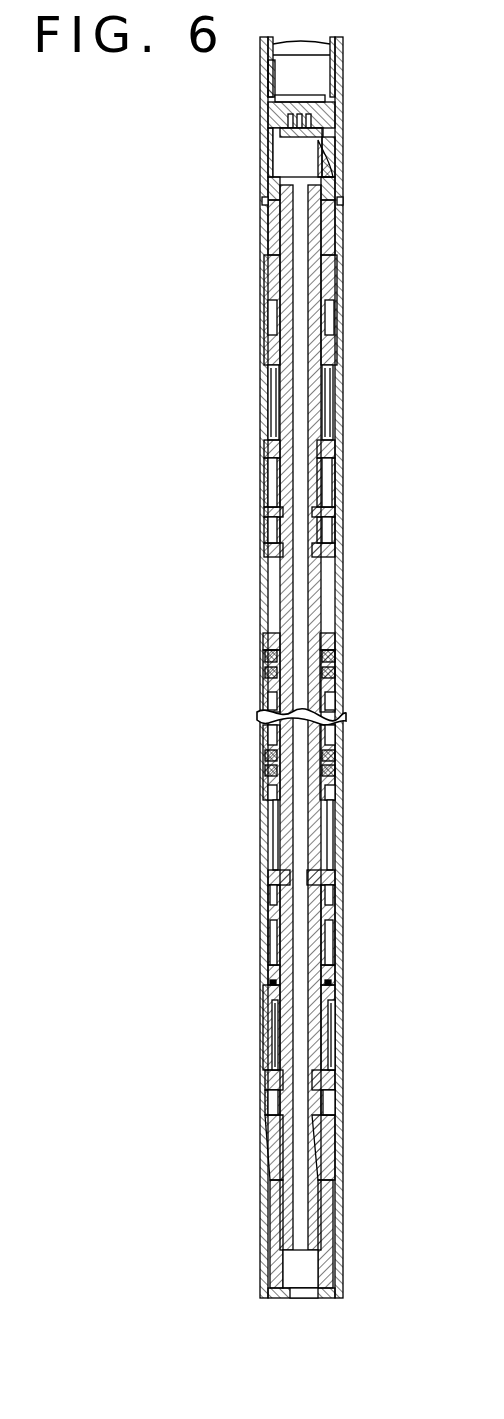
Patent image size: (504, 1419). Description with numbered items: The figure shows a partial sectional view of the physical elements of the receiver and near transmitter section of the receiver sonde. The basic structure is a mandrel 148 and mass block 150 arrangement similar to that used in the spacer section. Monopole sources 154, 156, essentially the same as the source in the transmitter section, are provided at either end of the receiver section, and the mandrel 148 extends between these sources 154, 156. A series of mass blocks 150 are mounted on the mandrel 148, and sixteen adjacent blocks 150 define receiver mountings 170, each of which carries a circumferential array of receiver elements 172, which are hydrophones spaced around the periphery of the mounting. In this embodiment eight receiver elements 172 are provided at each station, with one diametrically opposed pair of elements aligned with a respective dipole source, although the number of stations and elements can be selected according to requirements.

The mandrel 148 is at (303, 1252).
The mass block 150 is at (328, 932).
The monopole source 154 is at (338, 1023).
The monopole source 156 is at (343, 400).
The receiver mounting 170 is at (343, 641).
The receiver element 172 is at (335, 662).